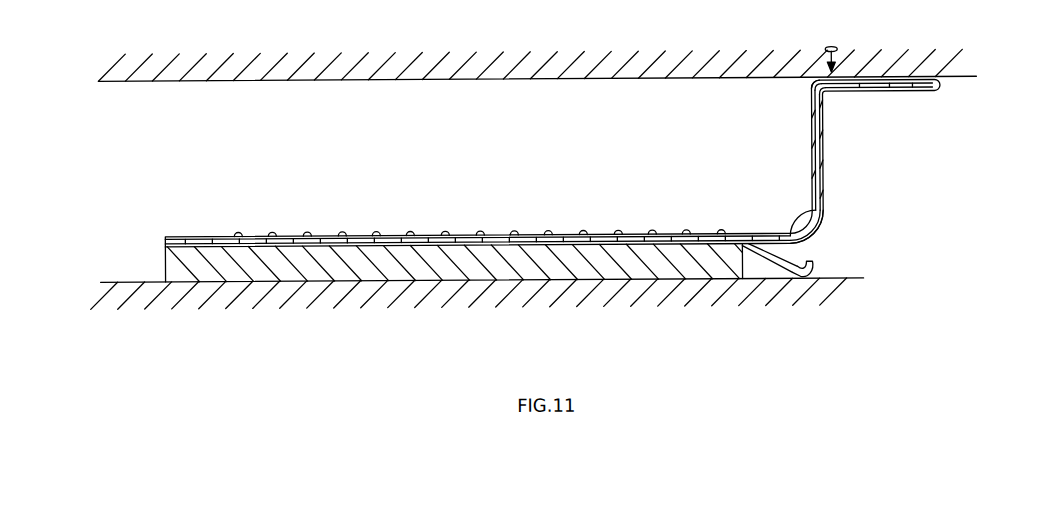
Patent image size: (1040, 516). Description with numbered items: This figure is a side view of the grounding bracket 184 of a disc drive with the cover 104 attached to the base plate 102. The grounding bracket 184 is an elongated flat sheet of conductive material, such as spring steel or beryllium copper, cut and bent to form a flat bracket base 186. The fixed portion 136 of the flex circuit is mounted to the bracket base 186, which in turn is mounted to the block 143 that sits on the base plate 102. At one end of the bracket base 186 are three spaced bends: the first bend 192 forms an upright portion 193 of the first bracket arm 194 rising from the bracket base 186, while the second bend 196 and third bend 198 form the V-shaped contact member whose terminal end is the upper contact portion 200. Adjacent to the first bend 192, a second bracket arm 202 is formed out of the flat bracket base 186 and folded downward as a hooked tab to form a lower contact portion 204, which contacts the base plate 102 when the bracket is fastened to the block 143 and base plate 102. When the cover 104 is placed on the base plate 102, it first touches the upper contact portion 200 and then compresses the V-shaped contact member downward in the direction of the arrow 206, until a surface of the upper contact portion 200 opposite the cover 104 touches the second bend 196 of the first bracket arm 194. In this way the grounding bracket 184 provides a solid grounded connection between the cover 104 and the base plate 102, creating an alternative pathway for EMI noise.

The base plate 102 is at (477, 287).
The cover 104 is at (587, 69).
The fixed portion 136 is at (572, 233).
The block 143 is at (172, 262).
The grounding bracket 184 is at (591, 141).
The bracket base 186 is at (413, 240).
The first bend 192 is at (813, 249).
The upright portion 193 is at (919, 78).
The first bracket arm 194 is at (822, 157).
The second bend 196 is at (826, 95).
The third bend 198 is at (941, 92).
The upper contact portion 200 is at (812, 81).
The second bracket arm 202 is at (770, 266).
The lower contact portion 204 is at (801, 279).
The arrow 206 is at (839, 51).